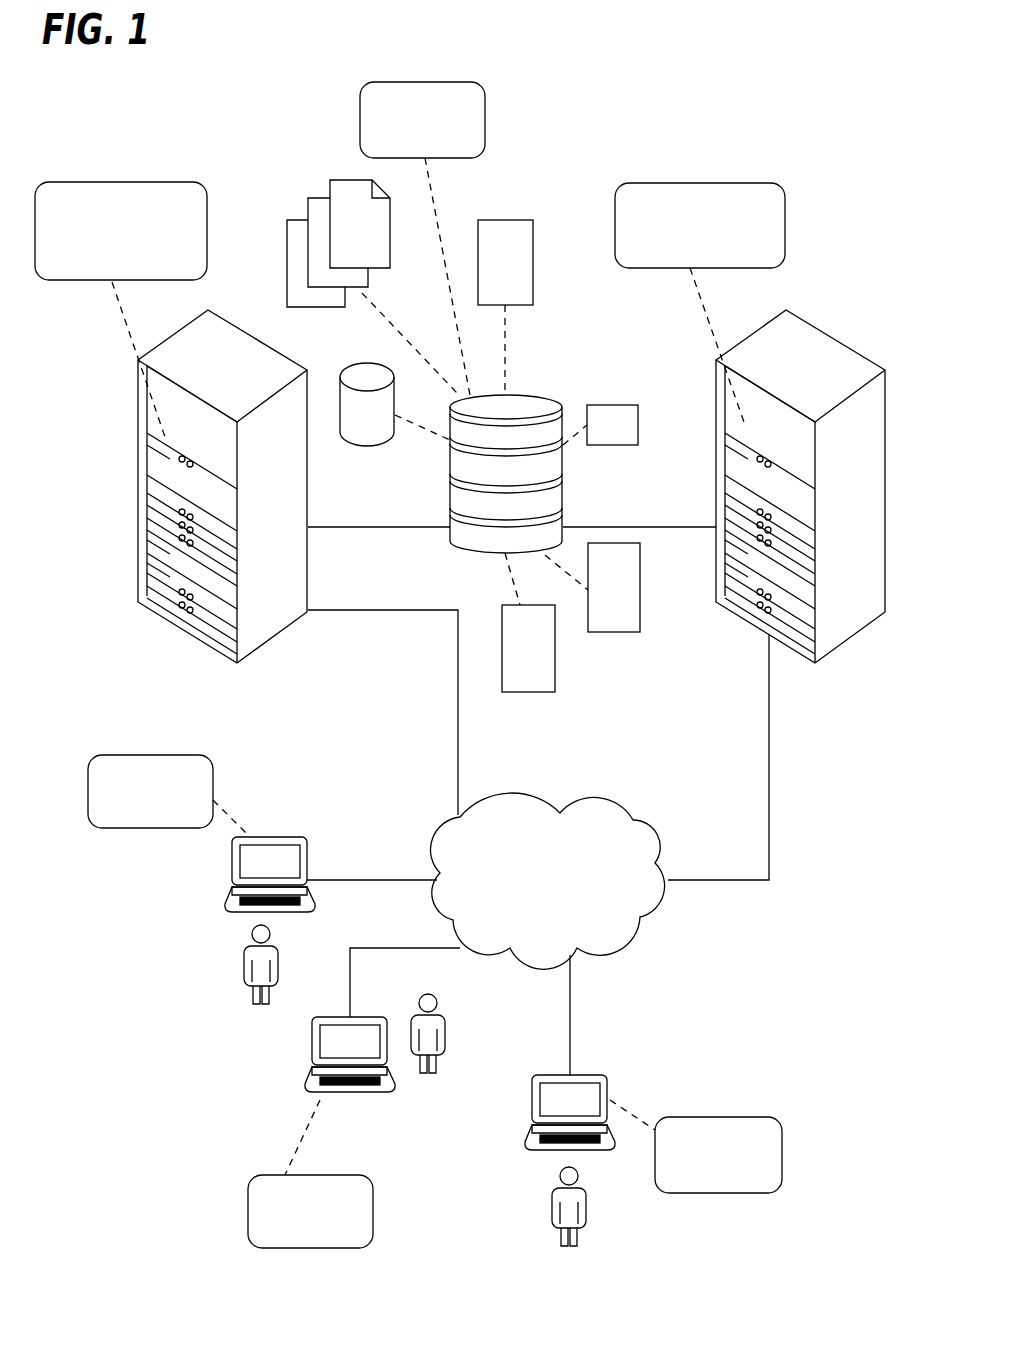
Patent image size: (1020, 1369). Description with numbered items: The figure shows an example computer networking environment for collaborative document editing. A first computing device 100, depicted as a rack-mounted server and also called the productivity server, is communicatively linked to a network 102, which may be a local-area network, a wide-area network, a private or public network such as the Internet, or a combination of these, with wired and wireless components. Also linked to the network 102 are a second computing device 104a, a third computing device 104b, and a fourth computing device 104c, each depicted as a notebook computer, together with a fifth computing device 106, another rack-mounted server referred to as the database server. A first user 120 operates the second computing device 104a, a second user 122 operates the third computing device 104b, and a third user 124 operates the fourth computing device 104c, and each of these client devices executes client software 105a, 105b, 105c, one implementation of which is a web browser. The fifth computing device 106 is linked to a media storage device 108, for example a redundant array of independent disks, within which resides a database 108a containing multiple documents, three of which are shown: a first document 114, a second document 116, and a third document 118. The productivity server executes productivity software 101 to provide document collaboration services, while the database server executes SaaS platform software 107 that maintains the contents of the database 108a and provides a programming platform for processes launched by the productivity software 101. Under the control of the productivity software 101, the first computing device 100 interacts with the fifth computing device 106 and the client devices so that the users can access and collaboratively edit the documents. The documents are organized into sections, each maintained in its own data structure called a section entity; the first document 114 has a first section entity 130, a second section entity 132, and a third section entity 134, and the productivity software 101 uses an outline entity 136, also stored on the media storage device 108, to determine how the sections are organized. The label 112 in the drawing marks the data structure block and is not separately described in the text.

The first computing device 100 is at (789, 457).
The productivity software 101 is at (705, 183).
The network 102 is at (595, 960).
The second computing device 104a is at (232, 877).
The third computing device 104b is at (312, 1060).
The fourth computing device 104c is at (532, 1115).
The client software 105a is at (160, 755).
The client software 105b is at (248, 1195).
The client software 105c is at (730, 1117).
The fifth computing device 106 is at (210, 452).
The SaaS platform software 107 is at (130, 182).
The media storage device 108 is at (515, 393).
The database 108a is at (372, 358).
The data structure 112 is at (440, 82).
The first document 114 is at (352, 178).
The second document 116 is at (322, 197).
The third document 118 is at (297, 216).
The first user 120 is at (242, 966).
The second user 122 is at (447, 1032).
The third user 124 is at (588, 1207).
The first section entity 130 is at (505, 220).
The second section entity 132 is at (518, 692).
The third section entity 134 is at (605, 632).
The outline entity 136 is at (610, 445).